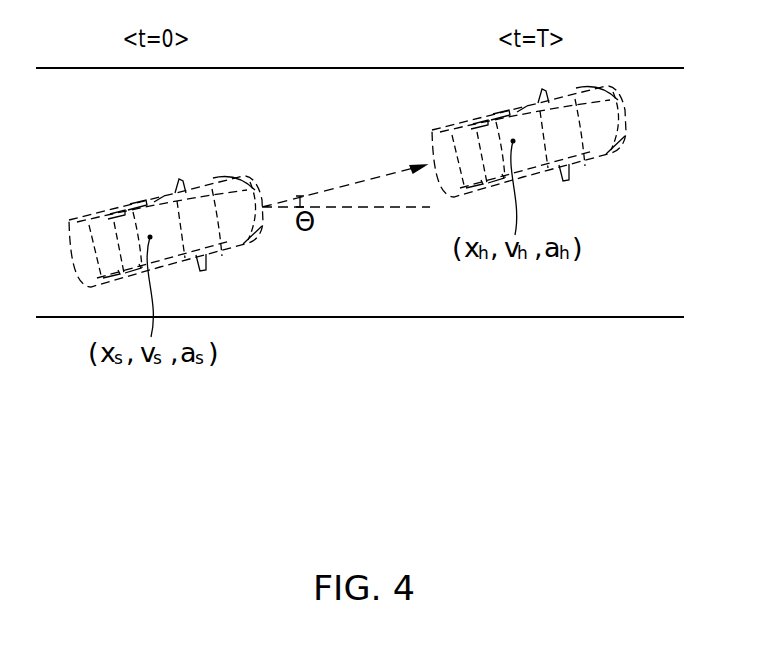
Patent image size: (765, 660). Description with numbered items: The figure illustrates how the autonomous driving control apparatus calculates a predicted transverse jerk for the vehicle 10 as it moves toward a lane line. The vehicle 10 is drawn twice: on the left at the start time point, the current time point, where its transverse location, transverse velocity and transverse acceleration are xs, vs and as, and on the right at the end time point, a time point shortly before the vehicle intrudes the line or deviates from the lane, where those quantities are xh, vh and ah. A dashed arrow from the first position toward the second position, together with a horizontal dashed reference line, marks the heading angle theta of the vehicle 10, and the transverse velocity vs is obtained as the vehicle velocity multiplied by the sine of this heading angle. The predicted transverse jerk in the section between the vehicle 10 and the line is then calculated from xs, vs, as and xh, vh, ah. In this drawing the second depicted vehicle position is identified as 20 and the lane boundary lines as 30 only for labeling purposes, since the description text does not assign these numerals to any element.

The vehicle 10 is at (141, 199).
The vehicle at time T 20 is at (529, 141).
The lane boundary lines 30 is at (360, 192).